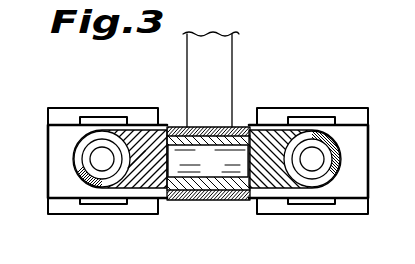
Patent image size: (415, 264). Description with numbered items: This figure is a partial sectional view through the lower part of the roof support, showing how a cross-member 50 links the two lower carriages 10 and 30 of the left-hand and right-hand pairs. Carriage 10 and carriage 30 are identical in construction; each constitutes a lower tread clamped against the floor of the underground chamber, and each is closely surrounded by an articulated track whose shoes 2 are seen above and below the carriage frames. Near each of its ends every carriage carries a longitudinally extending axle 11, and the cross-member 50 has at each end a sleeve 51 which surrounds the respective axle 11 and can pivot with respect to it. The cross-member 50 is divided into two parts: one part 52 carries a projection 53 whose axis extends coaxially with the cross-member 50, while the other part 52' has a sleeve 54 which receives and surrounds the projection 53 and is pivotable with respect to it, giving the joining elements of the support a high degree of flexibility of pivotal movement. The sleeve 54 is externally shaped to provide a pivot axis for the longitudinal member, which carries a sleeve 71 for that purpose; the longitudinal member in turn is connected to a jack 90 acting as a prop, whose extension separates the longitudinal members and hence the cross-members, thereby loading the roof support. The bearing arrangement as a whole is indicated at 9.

The shoes 2 is at (98, 213).
The bearing assembly 9 is at (48, 152).
The carriage 10 is at (60, 185).
The axle 11 is at (98, 145).
The carriage 30 is at (352, 192).
The cross-member 50 is at (160, 166).
The sleeve 51 is at (80, 142).
The part 52 is at (291, 124).
The other part 52' is at (128, 202).
The projection 53 is at (227, 162).
The sleeve 54 is at (186, 163).
The sleeve 71 is at (237, 127).
The jack 90 is at (187, 67).